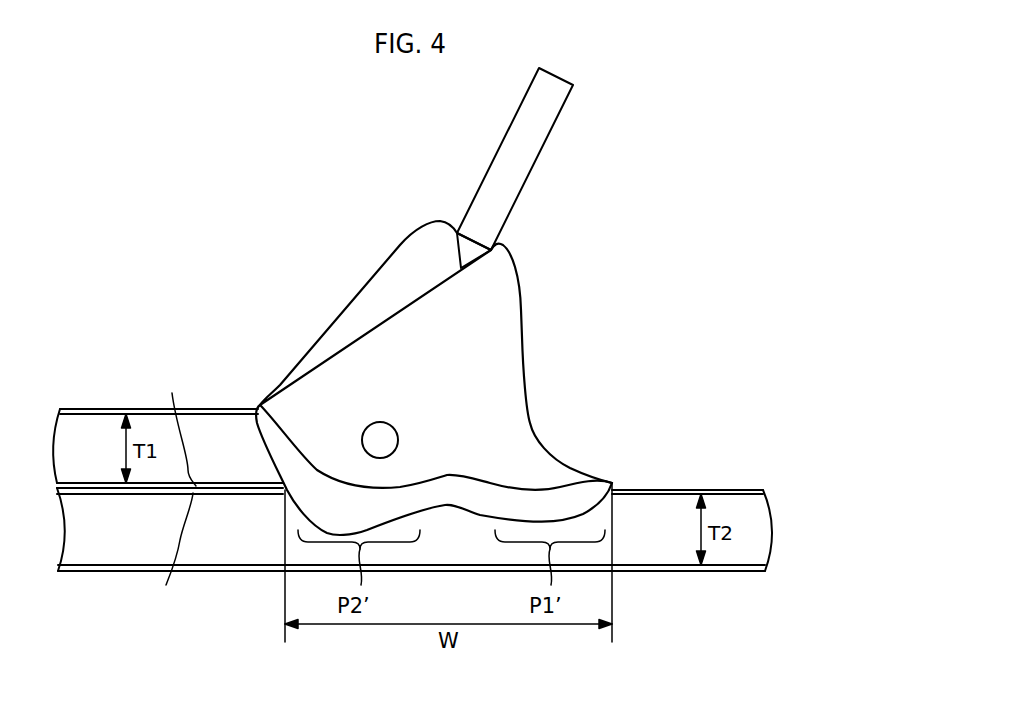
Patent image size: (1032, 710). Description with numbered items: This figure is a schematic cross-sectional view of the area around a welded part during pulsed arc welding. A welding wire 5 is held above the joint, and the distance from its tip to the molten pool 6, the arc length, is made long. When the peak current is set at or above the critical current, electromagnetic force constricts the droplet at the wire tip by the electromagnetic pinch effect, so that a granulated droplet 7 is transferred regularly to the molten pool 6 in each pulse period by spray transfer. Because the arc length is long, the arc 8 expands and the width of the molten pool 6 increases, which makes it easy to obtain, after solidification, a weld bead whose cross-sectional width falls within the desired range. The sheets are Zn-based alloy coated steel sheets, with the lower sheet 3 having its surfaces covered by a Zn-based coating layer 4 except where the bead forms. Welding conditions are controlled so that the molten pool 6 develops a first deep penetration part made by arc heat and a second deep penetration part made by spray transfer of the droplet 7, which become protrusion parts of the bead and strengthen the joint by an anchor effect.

The lower sheet 3 is at (645, 557).
The Zn-based coating layer 4 is at (195, 411).
The welding wire 5 is at (537, 147).
The molten pool 6 is at (468, 482).
The droplet 7 is at (396, 431).
The arc 8 is at (518, 318).